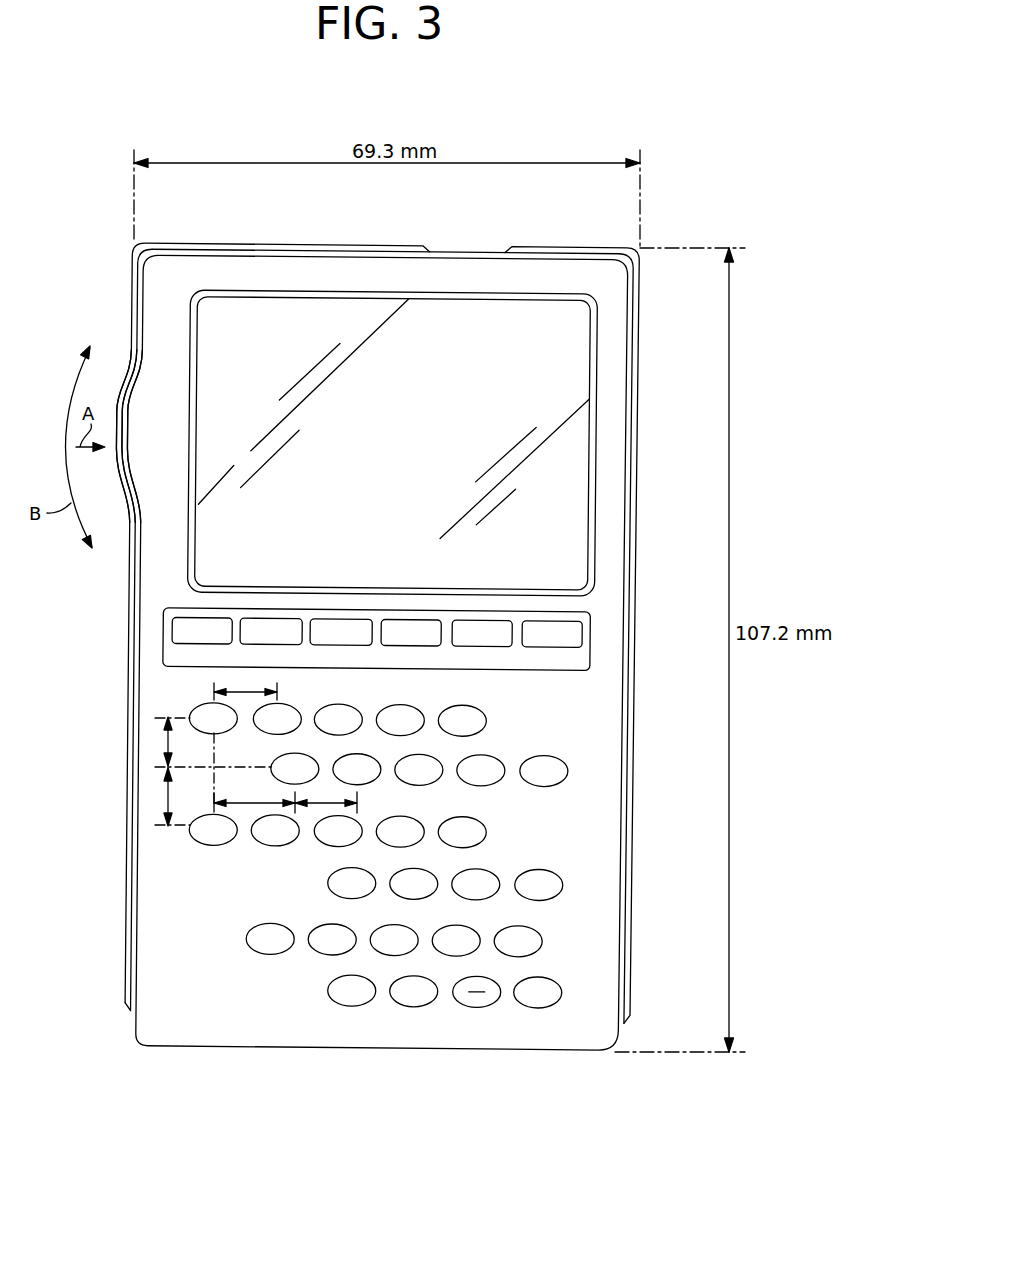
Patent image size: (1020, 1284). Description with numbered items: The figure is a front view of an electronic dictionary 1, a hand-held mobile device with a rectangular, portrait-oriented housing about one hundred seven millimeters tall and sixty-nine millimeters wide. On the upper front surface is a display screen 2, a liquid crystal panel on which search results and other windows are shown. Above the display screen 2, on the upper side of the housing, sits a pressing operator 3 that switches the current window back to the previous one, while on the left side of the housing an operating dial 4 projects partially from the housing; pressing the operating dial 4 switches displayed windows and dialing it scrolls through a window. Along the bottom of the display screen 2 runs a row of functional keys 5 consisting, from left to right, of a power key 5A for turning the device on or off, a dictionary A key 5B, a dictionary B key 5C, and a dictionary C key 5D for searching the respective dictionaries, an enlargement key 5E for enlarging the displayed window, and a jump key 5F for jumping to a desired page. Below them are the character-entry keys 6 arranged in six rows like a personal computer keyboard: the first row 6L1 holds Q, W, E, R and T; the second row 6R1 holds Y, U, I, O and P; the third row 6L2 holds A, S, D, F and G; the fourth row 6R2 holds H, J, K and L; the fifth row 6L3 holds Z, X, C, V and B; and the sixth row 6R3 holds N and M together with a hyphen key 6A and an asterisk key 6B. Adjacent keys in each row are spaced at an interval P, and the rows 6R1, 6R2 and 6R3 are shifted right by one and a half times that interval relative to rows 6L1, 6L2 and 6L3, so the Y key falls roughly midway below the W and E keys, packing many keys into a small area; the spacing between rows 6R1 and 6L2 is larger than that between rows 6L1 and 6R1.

The electronic dictionary 1 is at (168, 1068).
The display screen 2 is at (557, 349).
The pressing operator 3 is at (474, 242).
The operating dial 4 is at (105, 343).
The functional keys 5 is at (150, 640).
The power key 5A is at (207, 617).
The dictionary A key 5B is at (267, 619).
The dictionary B key 5C is at (332, 620).
The dictionary C key 5D is at (410, 620).
The enlargement key 5E is at (480, 621).
The jump key 5F is at (548, 622).
The character-entry keys 6 is at (397, 1032).
The first row of character-entry keys in group L 6L1 is at (500, 715).
The first row of character-entry keys in group R 6R1 is at (580, 770).
The second row of character-entry keys in group L 6L2 is at (497, 828).
The second row of character-entry keys in group R 6R2 is at (573, 880).
The third row of character-entry keys in group L 6L3 is at (553, 938).
The third row of character-entry keys in group R 6R3 is at (580, 988).
The hyphen key 6A is at (477, 1007).
The asterisk key 6B is at (563, 998).